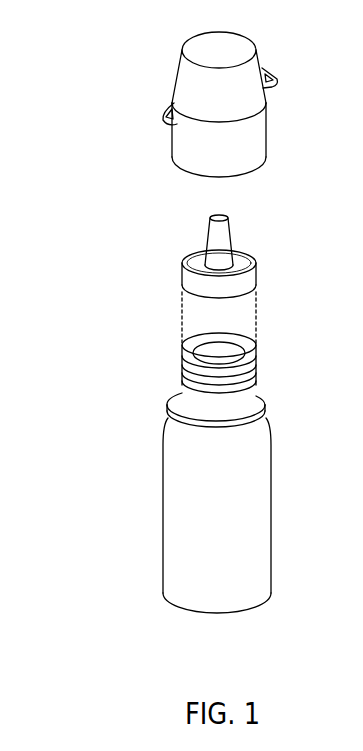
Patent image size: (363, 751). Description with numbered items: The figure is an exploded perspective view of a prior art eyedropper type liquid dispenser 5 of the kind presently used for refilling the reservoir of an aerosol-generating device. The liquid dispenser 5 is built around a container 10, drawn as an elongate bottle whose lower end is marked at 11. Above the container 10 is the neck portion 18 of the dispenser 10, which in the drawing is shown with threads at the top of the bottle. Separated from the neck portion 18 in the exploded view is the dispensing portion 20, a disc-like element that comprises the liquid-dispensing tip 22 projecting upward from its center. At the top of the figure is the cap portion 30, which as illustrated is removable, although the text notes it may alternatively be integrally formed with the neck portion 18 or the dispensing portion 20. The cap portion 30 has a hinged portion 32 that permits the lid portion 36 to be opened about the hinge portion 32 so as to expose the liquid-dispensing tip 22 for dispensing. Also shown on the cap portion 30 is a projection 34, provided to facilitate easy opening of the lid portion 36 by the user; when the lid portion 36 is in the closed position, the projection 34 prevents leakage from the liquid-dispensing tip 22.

The liquid dispenser 5 is at (88, 473).
The container 10 is at (282, 523).
The container bottom 11 is at (243, 615).
The neck portion 18 is at (195, 400).
The dispensing portion 20 is at (257, 268).
The liquid-dispensing tip 22 is at (207, 236).
The cap portion 30 is at (266, 145).
The hinged portion 32 is at (271, 81).
The projection 34 is at (168, 117).
The lid portion 36 is at (180, 63).